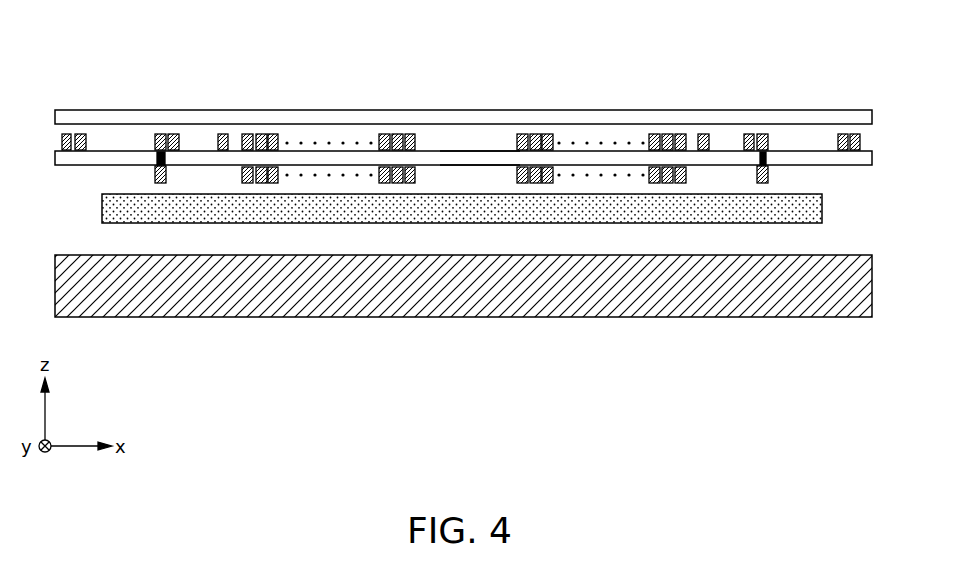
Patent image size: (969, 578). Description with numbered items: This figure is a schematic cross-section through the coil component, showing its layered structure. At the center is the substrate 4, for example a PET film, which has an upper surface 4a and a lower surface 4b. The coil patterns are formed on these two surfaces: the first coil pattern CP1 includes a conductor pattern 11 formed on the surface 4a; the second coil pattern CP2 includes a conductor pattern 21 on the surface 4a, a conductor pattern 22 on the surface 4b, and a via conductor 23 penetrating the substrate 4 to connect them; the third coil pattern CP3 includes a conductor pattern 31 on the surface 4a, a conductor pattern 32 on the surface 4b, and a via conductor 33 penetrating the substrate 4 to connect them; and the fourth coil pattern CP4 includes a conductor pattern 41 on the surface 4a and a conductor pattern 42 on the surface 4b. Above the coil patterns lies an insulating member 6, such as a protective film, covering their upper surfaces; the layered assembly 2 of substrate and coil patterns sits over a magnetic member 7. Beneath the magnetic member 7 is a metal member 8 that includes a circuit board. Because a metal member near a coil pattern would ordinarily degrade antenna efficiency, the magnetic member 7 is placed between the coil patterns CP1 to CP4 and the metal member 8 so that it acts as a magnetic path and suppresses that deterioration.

The substrate assembly 2 is at (487, 93).
The substrate 4 is at (862, 158).
The surface of the substrate 4a is at (457, 150).
The surface of the substrate 4b is at (457, 166).
The insulating member 6 is at (862, 117).
The magnetic member 7 is at (822, 206).
The metal member 8 is at (858, 289).
The conductor pattern 11 is at (223, 134).
The first coil pattern CP1 is at (457, 93).
The conductor pattern 21 is at (762, 134).
The conductor pattern 22 is at (768, 176).
The via conductor 23 is at (760, 158).
The second coil pattern CP2 is at (833, 58).
The conductor pattern 31 is at (80, 134).
The conductor pattern 32 is at (155, 175).
The via conductor 33 is at (165, 157).
The third coil pattern CP3 is at (175, 58).
The conductor pattern 41 is at (407, 134).
The conductor pattern 42 is at (413, 174).
The fourth coil pattern CP4 is at (478, 58).